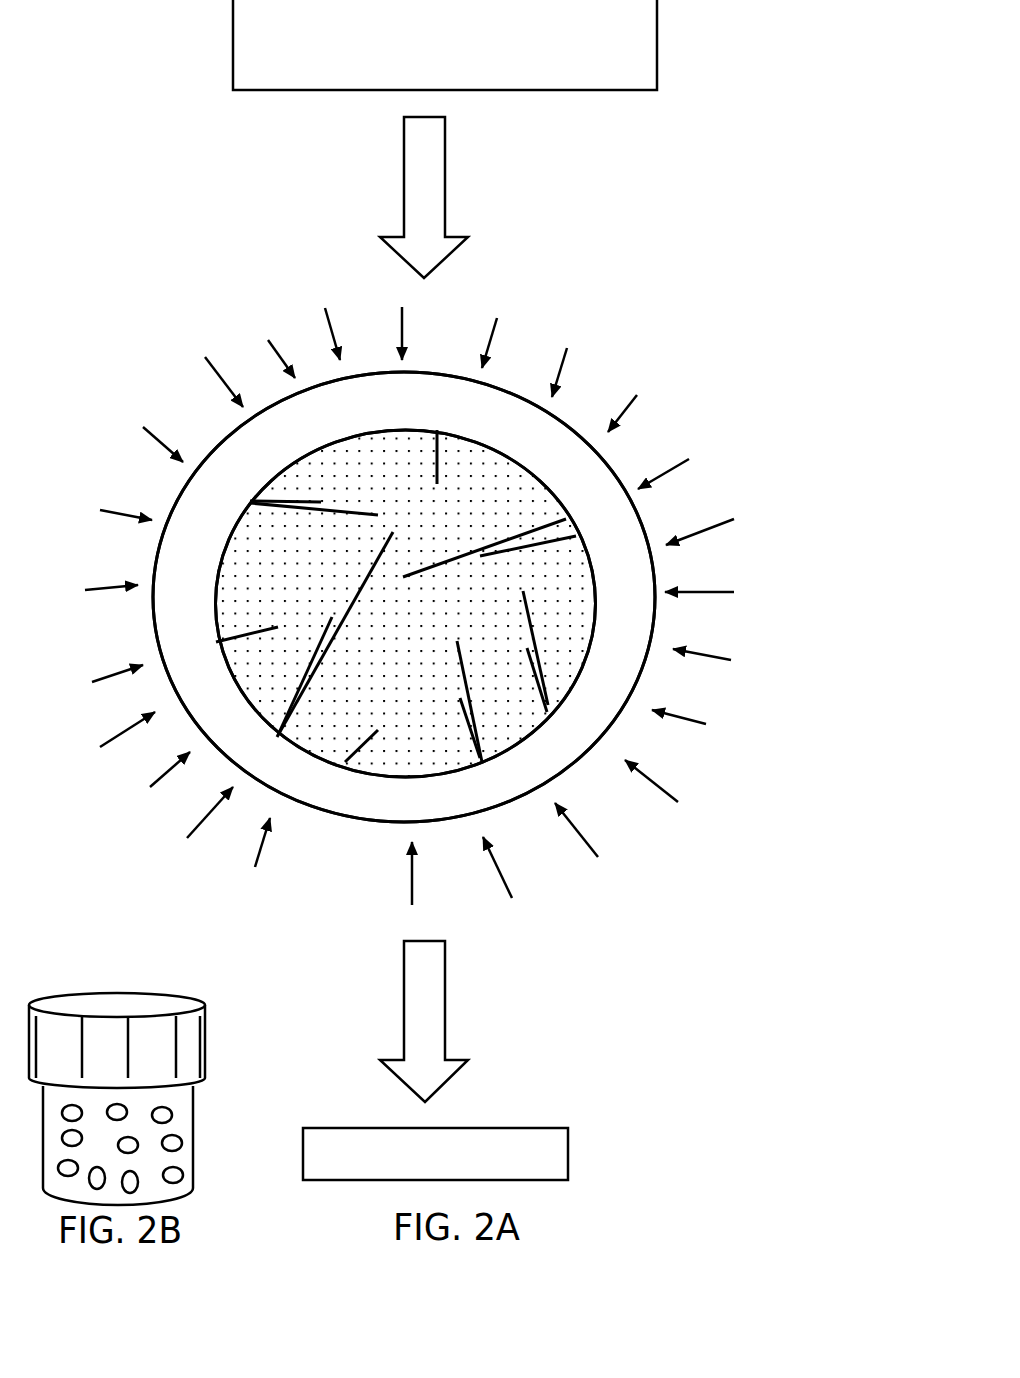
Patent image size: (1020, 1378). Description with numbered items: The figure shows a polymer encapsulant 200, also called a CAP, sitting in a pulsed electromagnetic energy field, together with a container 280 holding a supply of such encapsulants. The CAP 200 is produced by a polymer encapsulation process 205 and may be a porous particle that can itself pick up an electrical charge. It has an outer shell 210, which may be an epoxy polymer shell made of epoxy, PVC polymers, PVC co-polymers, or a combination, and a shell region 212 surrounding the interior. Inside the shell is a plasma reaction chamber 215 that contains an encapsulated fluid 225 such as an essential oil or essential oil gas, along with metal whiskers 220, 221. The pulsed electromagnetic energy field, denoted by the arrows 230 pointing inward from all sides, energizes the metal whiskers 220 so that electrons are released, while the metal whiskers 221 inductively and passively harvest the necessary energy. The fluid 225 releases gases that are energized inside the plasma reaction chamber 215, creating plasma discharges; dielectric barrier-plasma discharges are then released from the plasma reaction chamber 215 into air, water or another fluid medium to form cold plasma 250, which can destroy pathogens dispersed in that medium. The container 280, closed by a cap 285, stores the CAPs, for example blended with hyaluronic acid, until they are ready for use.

In FIG. 2A, the polymer encapsulation process 205 is at (660, 40).
In FIG. 2A, the polymer encapsulant 200 is at (326, 378).
In FIG. 2B, the polymer encapsulant 200 is at (180, 1142).
In FIG. 2A, the outer shell 210 is at (217, 455).
In FIG. 2A, the polymer shell 212 is at (205, 522).
In FIG. 2A, the plasma reaction chamber 215 is at (490, 488).
In FIG. 2A, the fluid 225 is at (562, 569).
In FIG. 2A, the metal whiskers 221 is at (537, 606).
In FIG. 2A, the metal whiskers 220 is at (540, 645).
In FIG. 2A, the arrows 230 is at (409, 644).
In FIG. 2A, the cold plasma 250 is at (570, 1157).
In FIG. 2B, the container 280 is at (85, 1002).
In FIG. 2B, the vial cap 285 is at (182, 1032).